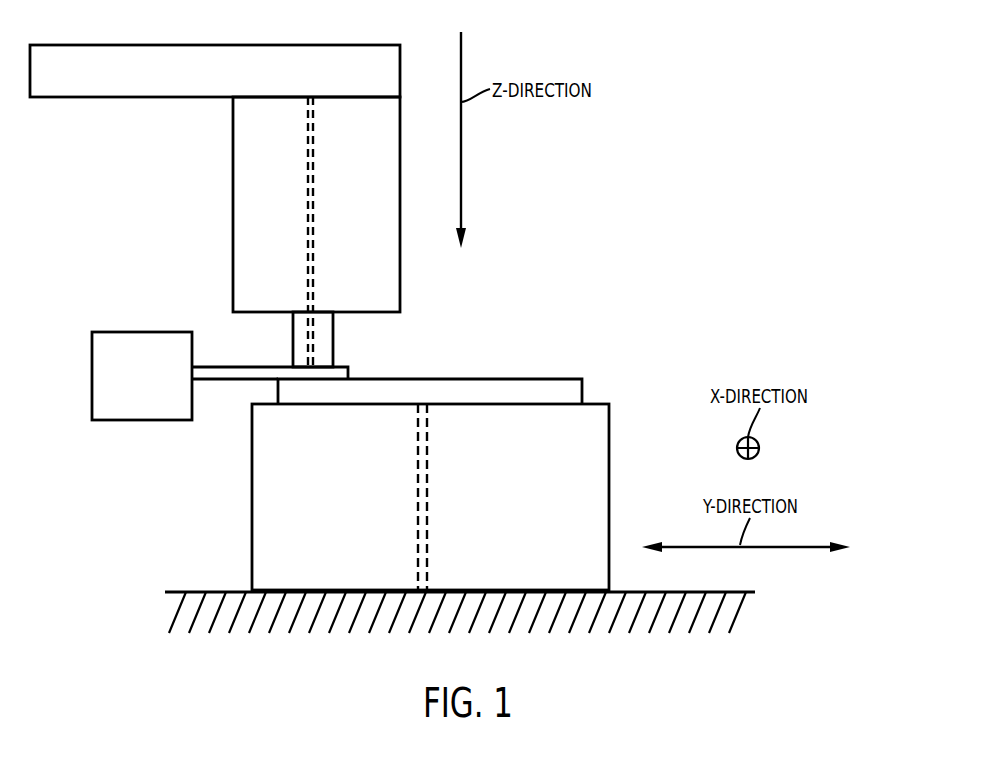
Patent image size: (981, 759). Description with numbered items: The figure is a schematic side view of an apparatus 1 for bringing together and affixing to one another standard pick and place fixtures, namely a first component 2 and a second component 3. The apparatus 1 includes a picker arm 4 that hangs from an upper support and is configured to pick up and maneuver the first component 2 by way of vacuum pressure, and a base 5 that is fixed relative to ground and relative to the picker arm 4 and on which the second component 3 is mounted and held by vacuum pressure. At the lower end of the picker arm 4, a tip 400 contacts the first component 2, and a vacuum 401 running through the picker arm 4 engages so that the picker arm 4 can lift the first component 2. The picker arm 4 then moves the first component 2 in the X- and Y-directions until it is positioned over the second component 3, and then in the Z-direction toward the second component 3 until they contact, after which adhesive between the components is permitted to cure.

The apparatus 1 is at (626, 258).
The first component 2 is at (92, 372).
The second component 3 is at (350, 378).
The picker arm 4 is at (233, 192).
The base 5 is at (250, 468).
The tip 400 is at (323, 341).
The vacuum 401 is at (314, 258).